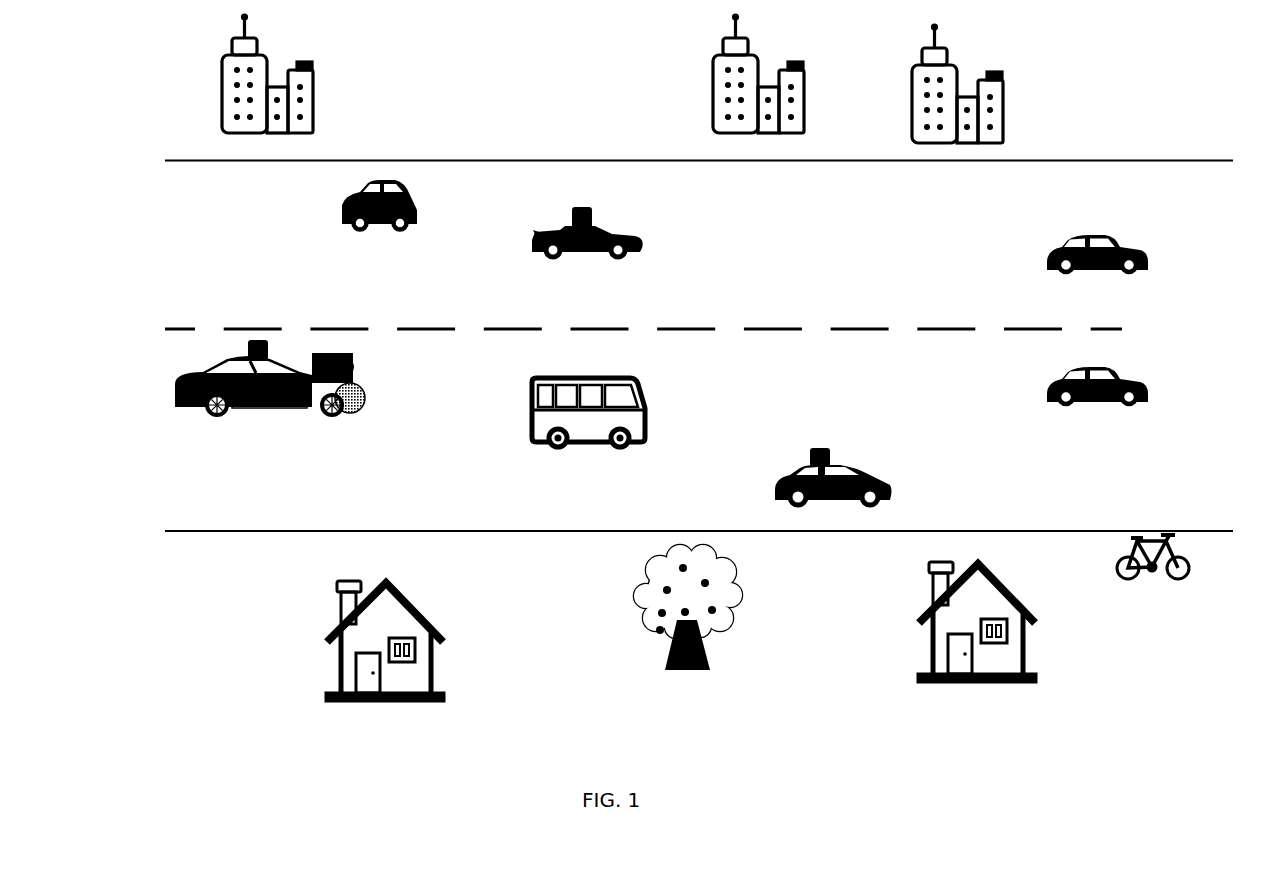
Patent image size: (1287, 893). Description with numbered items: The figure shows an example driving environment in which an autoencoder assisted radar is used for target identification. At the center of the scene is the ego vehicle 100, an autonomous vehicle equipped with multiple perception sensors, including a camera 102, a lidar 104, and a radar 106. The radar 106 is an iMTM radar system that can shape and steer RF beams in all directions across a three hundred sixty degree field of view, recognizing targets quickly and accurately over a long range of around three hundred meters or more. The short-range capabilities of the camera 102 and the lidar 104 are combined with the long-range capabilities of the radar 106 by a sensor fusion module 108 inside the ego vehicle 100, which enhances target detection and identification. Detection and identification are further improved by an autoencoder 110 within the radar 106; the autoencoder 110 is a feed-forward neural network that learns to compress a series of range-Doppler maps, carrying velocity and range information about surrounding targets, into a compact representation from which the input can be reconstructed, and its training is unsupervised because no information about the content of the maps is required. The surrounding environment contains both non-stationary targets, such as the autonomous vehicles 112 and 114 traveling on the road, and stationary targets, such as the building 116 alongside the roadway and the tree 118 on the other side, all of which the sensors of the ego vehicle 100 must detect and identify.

The ego vehicle 100 is at (180, 378).
The camera 102 is at (350, 410).
The lidar 104 is at (255, 342).
The radar 106 is at (323, 413).
The sensor fusion module 108 is at (242, 400).
The autoencoder 110 is at (352, 360).
The autonomous vehicle 112 is at (612, 232).
The autonomous vehicle 114 is at (848, 468).
The building 116 is at (313, 93).
The tree 118 is at (735, 588).